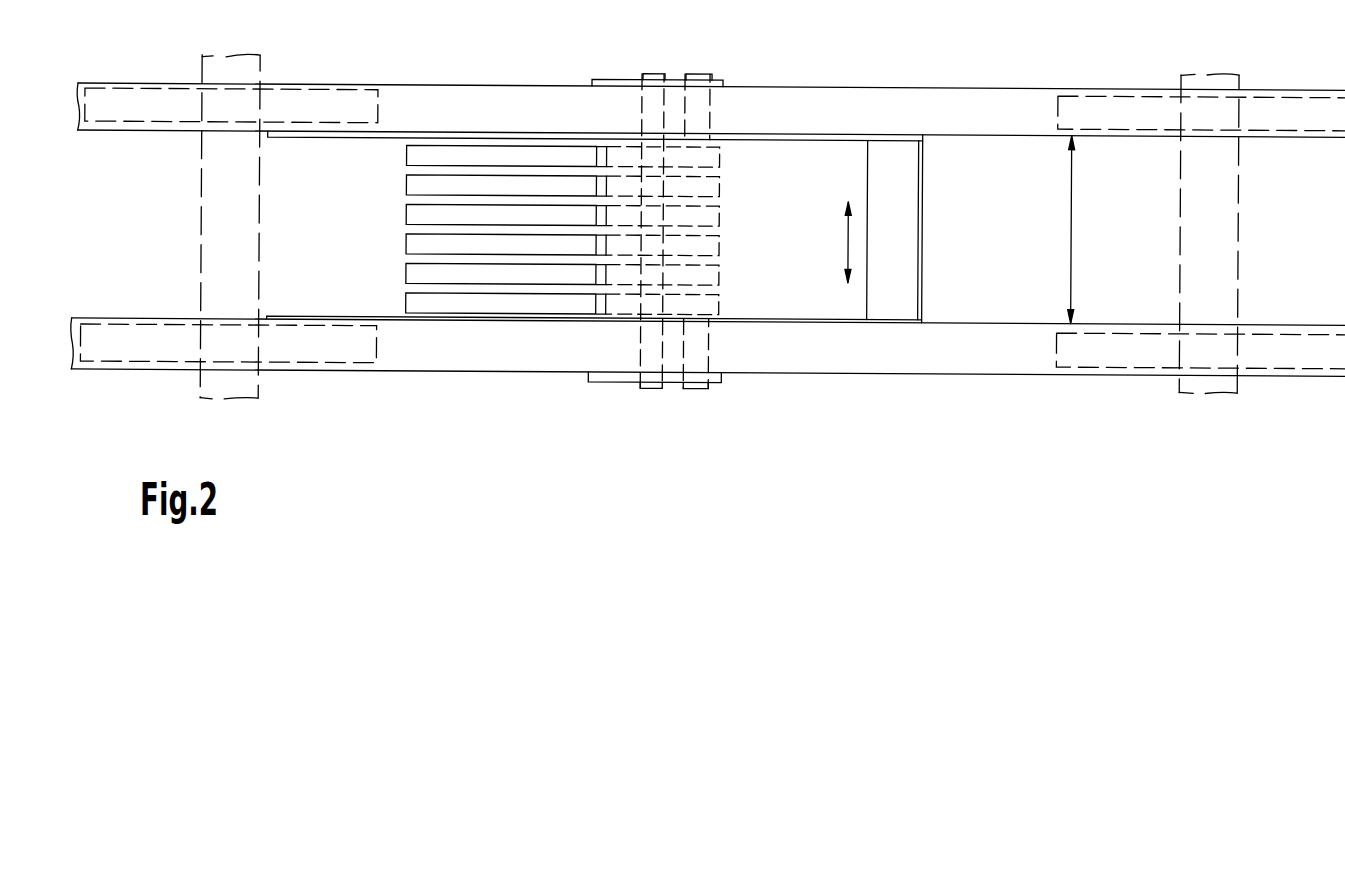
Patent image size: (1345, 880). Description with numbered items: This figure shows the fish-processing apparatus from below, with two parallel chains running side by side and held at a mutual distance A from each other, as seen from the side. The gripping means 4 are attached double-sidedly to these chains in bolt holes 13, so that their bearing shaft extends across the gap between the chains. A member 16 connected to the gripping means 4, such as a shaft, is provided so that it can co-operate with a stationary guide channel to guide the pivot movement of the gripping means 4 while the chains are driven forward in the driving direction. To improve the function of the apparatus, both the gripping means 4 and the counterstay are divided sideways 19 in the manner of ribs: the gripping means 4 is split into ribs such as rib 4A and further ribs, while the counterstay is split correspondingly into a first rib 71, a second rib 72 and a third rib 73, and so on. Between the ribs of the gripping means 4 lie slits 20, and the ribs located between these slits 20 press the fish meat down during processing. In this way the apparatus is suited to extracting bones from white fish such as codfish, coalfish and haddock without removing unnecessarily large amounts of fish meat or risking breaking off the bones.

The bolt holes 13 is at (717, 76).
The member (shaft) 16 is at (648, 345).
The gripping means 4 is at (720, 272).
The rib 4A is at (617, 302).
The sideways division 19 is at (849, 242).
The slits 20 is at (475, 301).
The counterstay rib 71 is at (475, 296).
The counterstay rib 72 is at (407, 274).
The counterstay rib 73 is at (407, 244).
The mutual distance A is at (1073, 232).